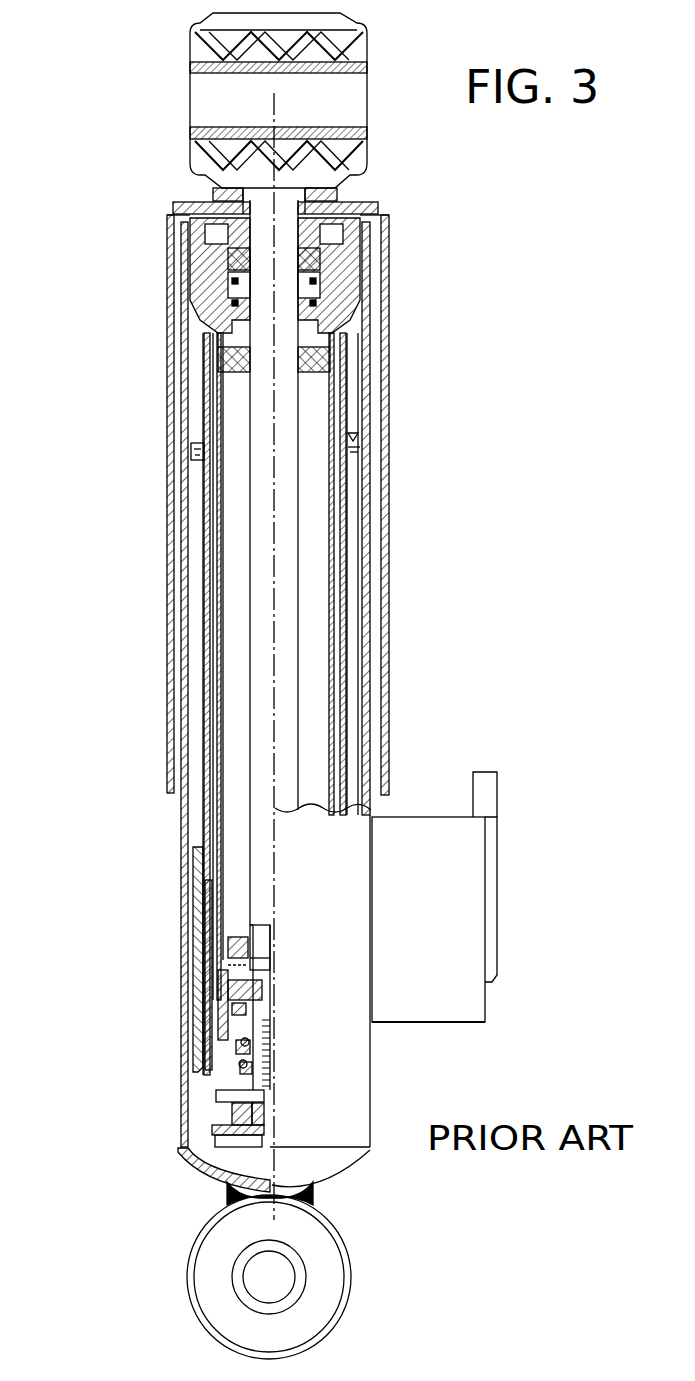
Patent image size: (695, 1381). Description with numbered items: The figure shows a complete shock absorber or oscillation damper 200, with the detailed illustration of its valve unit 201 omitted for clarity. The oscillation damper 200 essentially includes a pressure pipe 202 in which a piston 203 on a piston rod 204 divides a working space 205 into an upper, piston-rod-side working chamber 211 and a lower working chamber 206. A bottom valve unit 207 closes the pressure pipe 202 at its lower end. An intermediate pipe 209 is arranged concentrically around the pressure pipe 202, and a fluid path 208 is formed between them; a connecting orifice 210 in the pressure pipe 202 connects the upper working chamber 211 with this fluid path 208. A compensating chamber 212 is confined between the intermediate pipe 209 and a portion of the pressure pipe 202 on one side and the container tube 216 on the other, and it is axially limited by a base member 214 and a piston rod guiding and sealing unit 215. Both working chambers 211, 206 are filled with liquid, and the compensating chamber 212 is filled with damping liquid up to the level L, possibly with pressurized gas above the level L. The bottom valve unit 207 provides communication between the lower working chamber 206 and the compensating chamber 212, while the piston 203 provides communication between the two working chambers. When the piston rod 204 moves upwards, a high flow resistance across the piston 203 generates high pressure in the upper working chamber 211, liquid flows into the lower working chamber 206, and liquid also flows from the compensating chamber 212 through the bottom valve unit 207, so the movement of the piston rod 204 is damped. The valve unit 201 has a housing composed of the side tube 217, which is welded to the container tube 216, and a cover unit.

The oscillation damper 200 is at (137, 668).
The valve unit 201 is at (437, 805).
The pressure pipe 202 is at (338, 612).
The piston 203 is at (217, 1020).
The piston rod 204 is at (290, 498).
The working space 205 is at (230, 478).
The lower working chamber 206 is at (217, 1095).
The bottom valve unit 207 is at (215, 1130).
The fluid path 208 is at (345, 648).
The intermediate pipe 209 is at (345, 700).
The connecting orifice 210 is at (352, 412).
The upper working chamber 211 is at (230, 578).
The compensating chamber 212 is at (353, 578).
The base member 214 is at (180, 1147).
The piston rod guiding and sealing unit 215 is at (347, 308).
The container tube 216 is at (370, 538).
The side tube 217 is at (443, 1022).
The level L is at (200, 443).